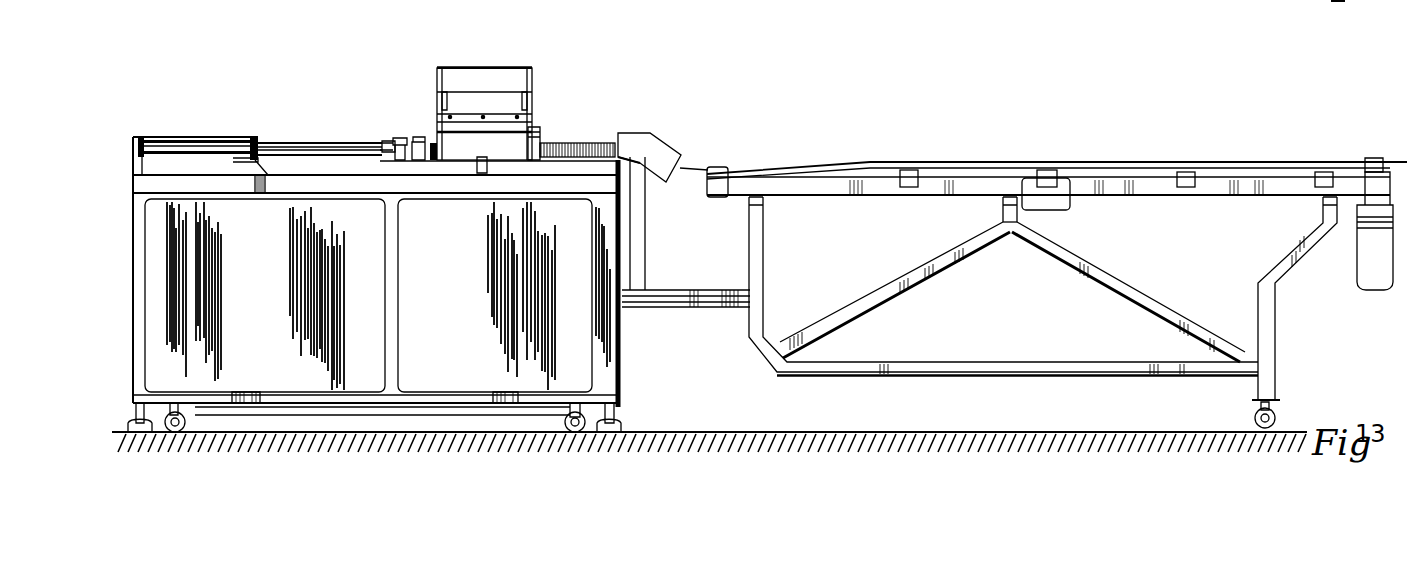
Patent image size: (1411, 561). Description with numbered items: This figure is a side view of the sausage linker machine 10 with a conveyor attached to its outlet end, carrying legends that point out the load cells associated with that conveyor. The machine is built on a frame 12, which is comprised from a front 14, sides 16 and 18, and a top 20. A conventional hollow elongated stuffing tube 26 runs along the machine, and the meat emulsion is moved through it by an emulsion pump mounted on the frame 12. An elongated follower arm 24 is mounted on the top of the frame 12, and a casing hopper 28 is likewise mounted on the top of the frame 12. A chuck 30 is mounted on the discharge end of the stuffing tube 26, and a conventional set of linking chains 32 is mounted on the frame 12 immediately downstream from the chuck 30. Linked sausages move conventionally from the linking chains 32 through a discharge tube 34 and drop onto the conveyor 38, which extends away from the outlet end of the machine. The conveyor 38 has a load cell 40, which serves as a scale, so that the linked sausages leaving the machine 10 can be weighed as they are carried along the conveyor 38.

The sausage linker machine 10 is at (303, 168).
The frame 12 is at (597, 408).
The front 14 is at (258, 290).
The frame side 16 is at (128, 248).
The frame side 18 is at (618, 347).
The top 20 is at (283, 86).
The follower arm 24 is at (300, 152).
The stuffing tube 26 is at (285, 146).
The casing hopper 28 is at (542, 127).
The chuck 30 is at (503, 72).
The linking chains 32 is at (598, 143).
The discharge tube 34 is at (655, 150).
The conveyor 38 is at (1100, 165).
The load cell 40 is at (1032, 188).